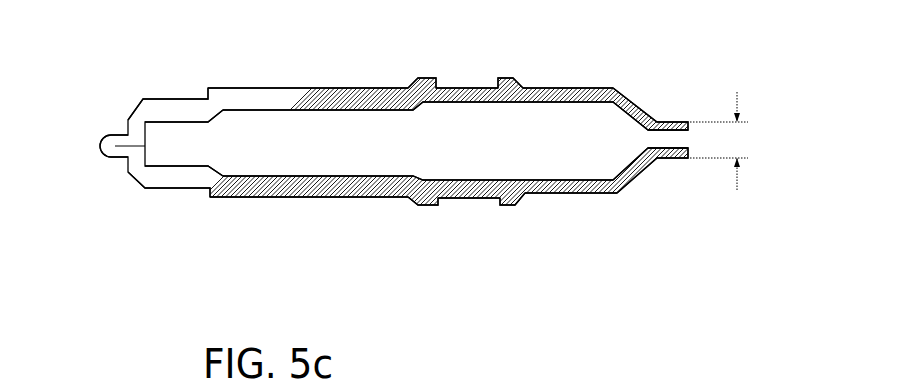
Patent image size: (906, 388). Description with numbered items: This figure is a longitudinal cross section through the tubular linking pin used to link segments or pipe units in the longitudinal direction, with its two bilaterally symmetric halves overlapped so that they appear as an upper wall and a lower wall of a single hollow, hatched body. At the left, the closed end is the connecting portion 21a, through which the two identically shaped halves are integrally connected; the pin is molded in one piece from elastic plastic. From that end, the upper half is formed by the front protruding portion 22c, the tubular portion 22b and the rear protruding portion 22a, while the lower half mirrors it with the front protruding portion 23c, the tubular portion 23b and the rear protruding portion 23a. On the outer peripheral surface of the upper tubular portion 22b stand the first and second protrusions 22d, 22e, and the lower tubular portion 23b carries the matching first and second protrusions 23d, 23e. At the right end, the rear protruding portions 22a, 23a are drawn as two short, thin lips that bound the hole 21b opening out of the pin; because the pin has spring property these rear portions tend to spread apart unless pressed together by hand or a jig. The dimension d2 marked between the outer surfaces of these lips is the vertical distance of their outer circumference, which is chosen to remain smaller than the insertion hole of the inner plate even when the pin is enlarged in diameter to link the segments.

The connecting portion 21a is at (105, 132).
The hole 21b is at (667, 139).
The protruding portion 22a is at (670, 121).
The tubular portion 22b is at (307, 88).
The protruding portion 22c is at (177, 98).
The first protrusion 22d is at (427, 78).
The second protrusion 22e is at (507, 78).
The protruding portion 23a is at (677, 159).
The tubular portion 23b is at (312, 198).
The protruding portion 23c is at (180, 190).
The first protrusion 23d is at (433, 206).
The second protrusion 23e is at (507, 206).
The vertical distance d2 is at (719, 141).